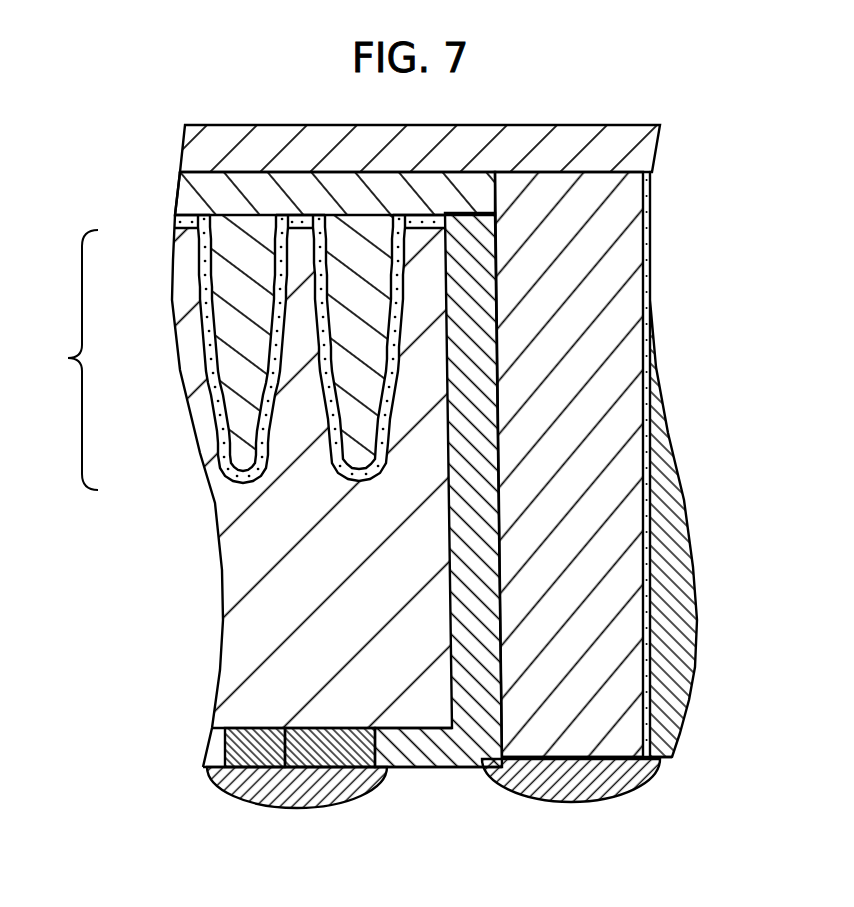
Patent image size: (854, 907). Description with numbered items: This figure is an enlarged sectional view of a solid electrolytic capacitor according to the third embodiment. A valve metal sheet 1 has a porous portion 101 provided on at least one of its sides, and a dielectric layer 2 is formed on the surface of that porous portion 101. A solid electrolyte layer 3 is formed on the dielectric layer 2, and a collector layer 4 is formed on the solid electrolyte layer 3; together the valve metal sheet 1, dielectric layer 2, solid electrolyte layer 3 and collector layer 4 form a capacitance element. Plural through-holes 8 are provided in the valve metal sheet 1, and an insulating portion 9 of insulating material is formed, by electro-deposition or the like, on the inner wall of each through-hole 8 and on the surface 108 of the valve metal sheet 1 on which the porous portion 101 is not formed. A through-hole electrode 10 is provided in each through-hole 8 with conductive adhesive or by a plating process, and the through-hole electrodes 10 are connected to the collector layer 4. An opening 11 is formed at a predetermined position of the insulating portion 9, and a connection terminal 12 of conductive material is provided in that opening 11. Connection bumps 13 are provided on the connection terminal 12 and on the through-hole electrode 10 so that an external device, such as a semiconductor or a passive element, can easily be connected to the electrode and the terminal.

The valve metal sheet 1 is at (233, 540).
The dielectric layer 2 is at (200, 305).
The solid electrolyte layer 3 is at (228, 235).
The collector layer 4 is at (197, 148).
The porous portion 101 is at (55, 360).
The through-hole 8 is at (646, 249).
The insulating portion 9 is at (651, 338).
The through-hole electrode 10 is at (614, 462).
The opening 11 is at (290, 733).
The connection terminal 12 is at (378, 785).
The surface 108 is at (440, 755).
The connection bump 13 is at (590, 767).